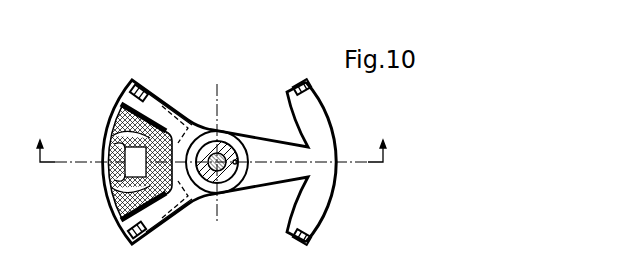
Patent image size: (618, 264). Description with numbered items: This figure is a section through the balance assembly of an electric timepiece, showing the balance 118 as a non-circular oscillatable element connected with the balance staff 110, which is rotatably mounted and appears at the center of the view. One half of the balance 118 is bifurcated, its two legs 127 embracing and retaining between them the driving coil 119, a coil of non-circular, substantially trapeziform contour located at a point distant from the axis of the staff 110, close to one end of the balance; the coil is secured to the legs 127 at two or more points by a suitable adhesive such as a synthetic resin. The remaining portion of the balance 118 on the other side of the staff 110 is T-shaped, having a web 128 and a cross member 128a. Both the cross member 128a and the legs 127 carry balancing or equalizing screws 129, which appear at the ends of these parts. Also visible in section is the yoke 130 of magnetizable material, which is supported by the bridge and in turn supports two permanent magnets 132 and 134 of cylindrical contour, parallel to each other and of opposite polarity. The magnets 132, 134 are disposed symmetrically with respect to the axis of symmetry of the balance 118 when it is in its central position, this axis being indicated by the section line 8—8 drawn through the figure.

The section line 8— 8 is at (211, 158).
The balance staff 110 is at (223, 154).
The balance 118 is at (251, 192).
The driving coil 119 is at (110, 131).
The legs 127 is at (172, 112).
The web 128 is at (272, 176).
The cross member 128a is at (325, 192).
The balancing or equalizing screws 129 is at (140, 90).
The yoke 130 is at (121, 104).
The permanent magnet 132 is at (124, 118).
The permanent magnet 134 is at (106, 177).